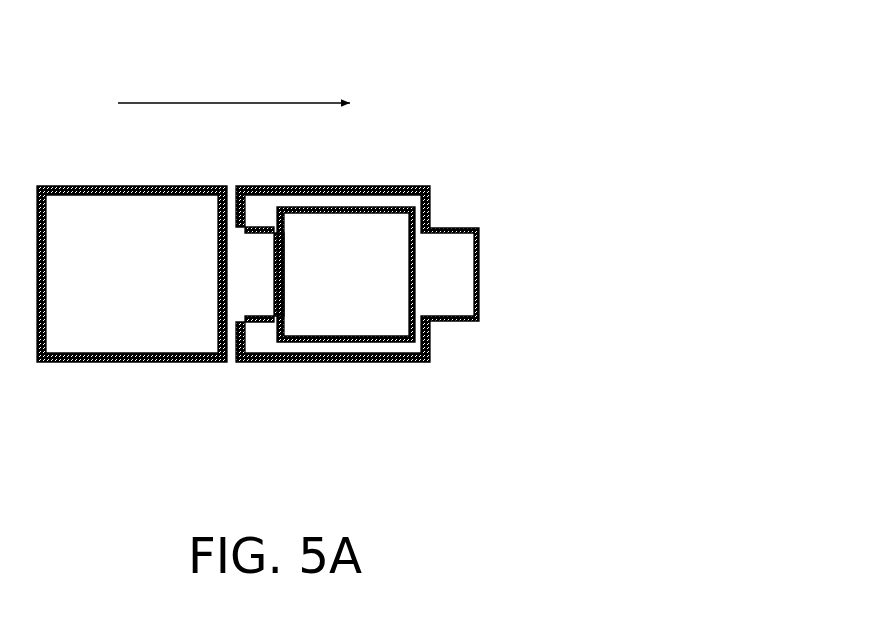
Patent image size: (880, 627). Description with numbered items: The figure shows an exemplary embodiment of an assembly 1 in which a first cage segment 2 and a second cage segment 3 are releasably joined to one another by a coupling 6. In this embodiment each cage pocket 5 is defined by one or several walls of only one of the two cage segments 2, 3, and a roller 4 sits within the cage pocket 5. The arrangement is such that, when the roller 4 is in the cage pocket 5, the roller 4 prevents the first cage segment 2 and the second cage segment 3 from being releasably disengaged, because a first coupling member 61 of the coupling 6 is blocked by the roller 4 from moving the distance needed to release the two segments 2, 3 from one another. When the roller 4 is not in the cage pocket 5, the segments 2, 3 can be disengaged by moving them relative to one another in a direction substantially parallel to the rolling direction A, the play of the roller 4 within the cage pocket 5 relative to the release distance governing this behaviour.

The assembly 1 is at (476, 99).
The first cage segment 2 is at (415, 364).
The second cage segment 3 is at (124, 364).
The roller 4 is at (390, 249).
The cage pocket 5 is at (73, 215).
The coupling 6 is at (310, 362).
The first coupling member 61 is at (240, 300).